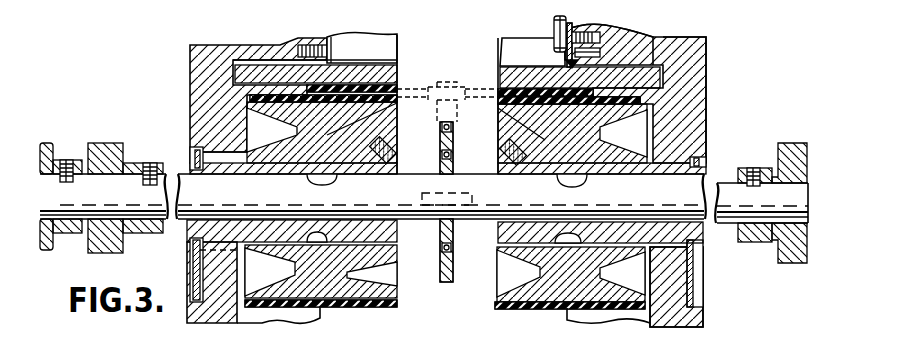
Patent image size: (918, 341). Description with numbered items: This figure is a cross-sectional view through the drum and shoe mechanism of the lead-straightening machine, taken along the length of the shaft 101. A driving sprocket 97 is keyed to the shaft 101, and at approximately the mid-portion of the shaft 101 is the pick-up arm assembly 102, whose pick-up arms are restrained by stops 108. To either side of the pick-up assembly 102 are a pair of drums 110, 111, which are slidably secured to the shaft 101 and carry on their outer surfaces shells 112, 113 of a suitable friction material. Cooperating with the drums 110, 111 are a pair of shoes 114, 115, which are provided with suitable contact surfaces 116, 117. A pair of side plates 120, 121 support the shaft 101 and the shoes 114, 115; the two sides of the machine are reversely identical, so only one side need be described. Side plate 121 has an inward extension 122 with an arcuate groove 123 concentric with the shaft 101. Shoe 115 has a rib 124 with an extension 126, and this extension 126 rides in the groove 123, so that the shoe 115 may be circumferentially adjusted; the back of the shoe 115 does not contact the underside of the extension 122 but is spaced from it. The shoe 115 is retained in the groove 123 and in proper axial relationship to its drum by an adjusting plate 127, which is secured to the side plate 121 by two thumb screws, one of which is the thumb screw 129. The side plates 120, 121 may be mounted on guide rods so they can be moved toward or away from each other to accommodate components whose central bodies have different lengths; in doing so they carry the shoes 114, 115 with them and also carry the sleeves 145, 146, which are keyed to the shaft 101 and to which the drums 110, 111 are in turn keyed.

The driving sprocket 97 is at (45, 143).
The shaft 101 is at (414, 178).
The pick-up arm assembly 102 is at (453, 176).
The stops 108 is at (450, 130).
The drum 110 is at (382, 287).
The drum 111 is at (507, 288).
The shell 112 is at (383, 305).
The shell 113 is at (496, 304).
The shoe 114 is at (398, 82).
The shoe 115 is at (498, 78).
The contact surface 116 is at (398, 92).
The contact surface 117 is at (498, 89).
The side plate 120 is at (192, 60).
The side plate 121 is at (704, 70).
The inward extension 122 is at (680, 45).
The arcuate groove 123 is at (615, 38).
The rib 124 is at (572, 65).
The extension 126 is at (625, 28).
The adjusting plate 127 is at (572, 40).
The thumb screw 129 is at (555, 30).
The sleeve 145 is at (384, 230).
The sleeve 146 is at (510, 230).